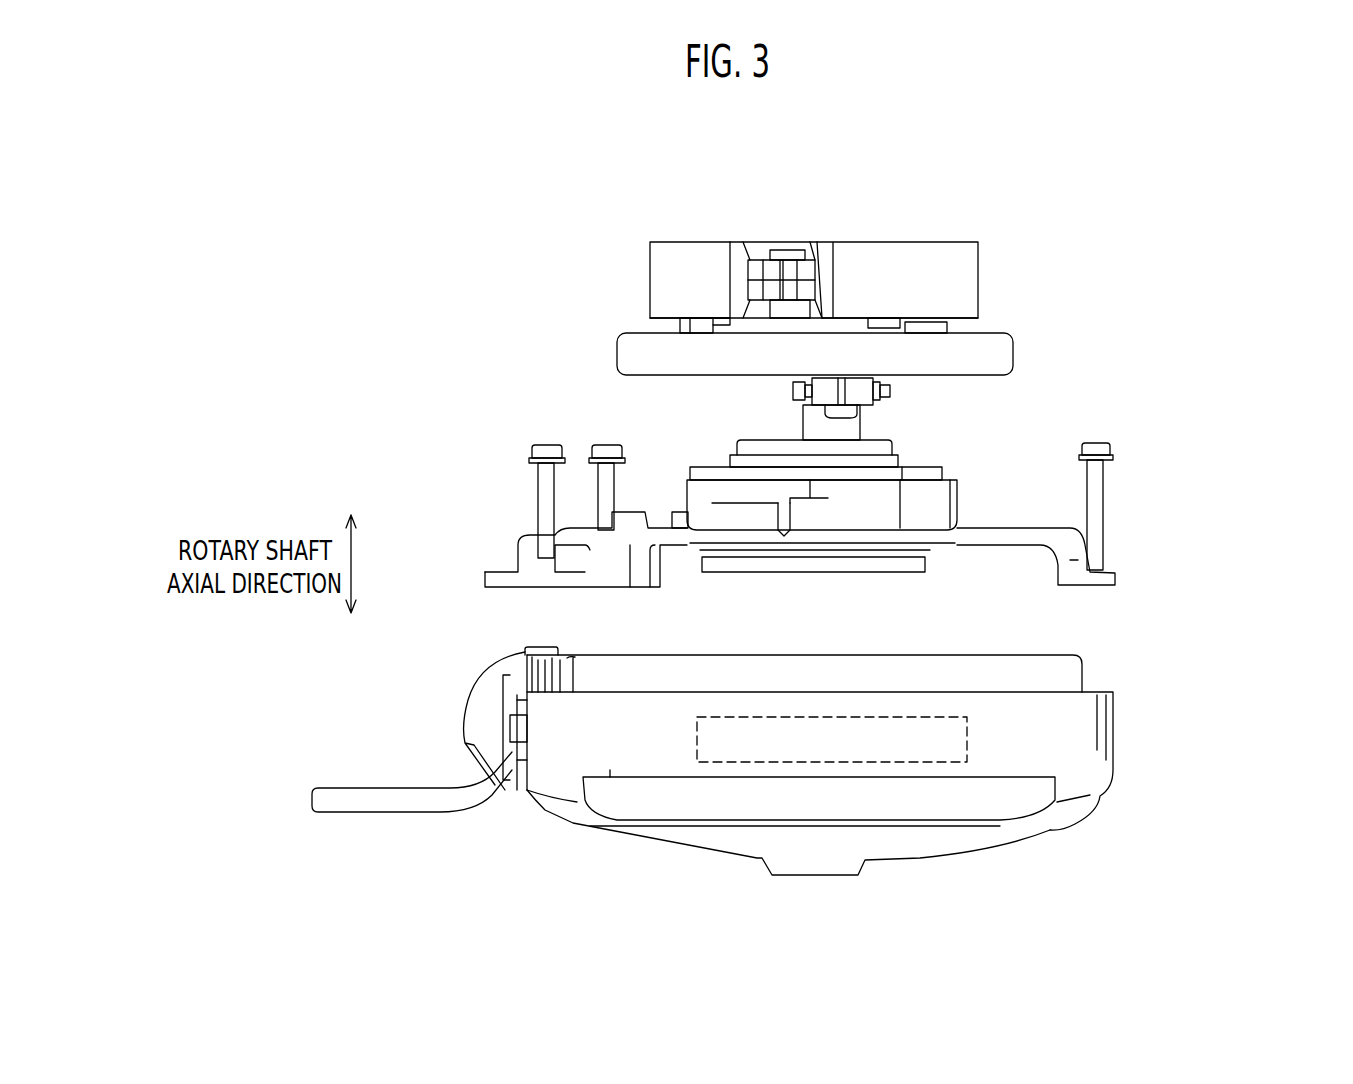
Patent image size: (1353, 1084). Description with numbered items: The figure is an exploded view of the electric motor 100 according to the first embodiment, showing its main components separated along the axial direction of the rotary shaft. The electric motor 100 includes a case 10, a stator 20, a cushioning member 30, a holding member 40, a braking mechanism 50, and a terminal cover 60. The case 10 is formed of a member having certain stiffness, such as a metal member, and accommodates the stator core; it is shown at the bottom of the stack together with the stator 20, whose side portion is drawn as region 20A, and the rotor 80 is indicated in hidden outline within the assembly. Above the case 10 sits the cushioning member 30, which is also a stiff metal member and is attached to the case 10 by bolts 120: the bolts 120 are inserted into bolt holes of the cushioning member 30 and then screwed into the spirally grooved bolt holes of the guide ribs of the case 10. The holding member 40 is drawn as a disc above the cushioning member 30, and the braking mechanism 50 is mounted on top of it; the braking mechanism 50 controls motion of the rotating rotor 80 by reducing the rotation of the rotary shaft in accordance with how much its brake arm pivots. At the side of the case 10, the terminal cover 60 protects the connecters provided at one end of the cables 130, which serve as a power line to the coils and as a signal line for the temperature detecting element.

The electric motor 100 is at (976, 182).
The braking mechanism 50 is at (978, 272).
The holding member 40 is at (1013, 347).
The cushioning member 30 is at (522, 556).
The bolt 120 is at (540, 487).
The stator 20 is at (1122, 736).
The housing side wall 20A is at (572, 737).
The terminal cover 60 is at (493, 690).
The cable 130 is at (365, 798).
The case 10 is at (575, 822).
The rotor 80 is at (750, 762).